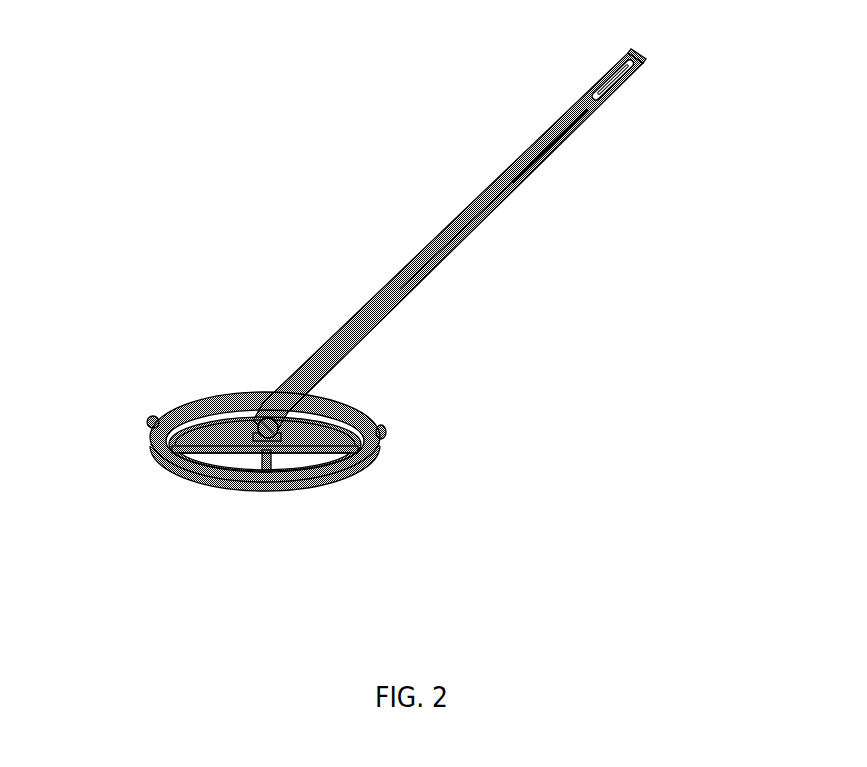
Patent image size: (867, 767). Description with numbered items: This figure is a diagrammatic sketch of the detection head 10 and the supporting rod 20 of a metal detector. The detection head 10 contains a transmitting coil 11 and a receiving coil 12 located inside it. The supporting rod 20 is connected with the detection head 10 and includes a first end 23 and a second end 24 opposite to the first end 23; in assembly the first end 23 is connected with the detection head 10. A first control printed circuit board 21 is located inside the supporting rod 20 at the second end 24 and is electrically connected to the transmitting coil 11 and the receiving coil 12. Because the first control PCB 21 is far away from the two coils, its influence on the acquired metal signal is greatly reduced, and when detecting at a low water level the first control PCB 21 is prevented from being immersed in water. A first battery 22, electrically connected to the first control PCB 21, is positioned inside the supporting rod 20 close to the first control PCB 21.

The detection head 10 is at (280, 458).
The transmitting coil 11 is at (310, 482).
The receiving coil 12 is at (382, 431).
The supporting rod 20 is at (459, 230).
The first control printed circuit board 21 is at (560, 147).
The first battery 22 is at (630, 86).
The first end 23 is at (282, 382).
The second end 24 is at (578, 102).